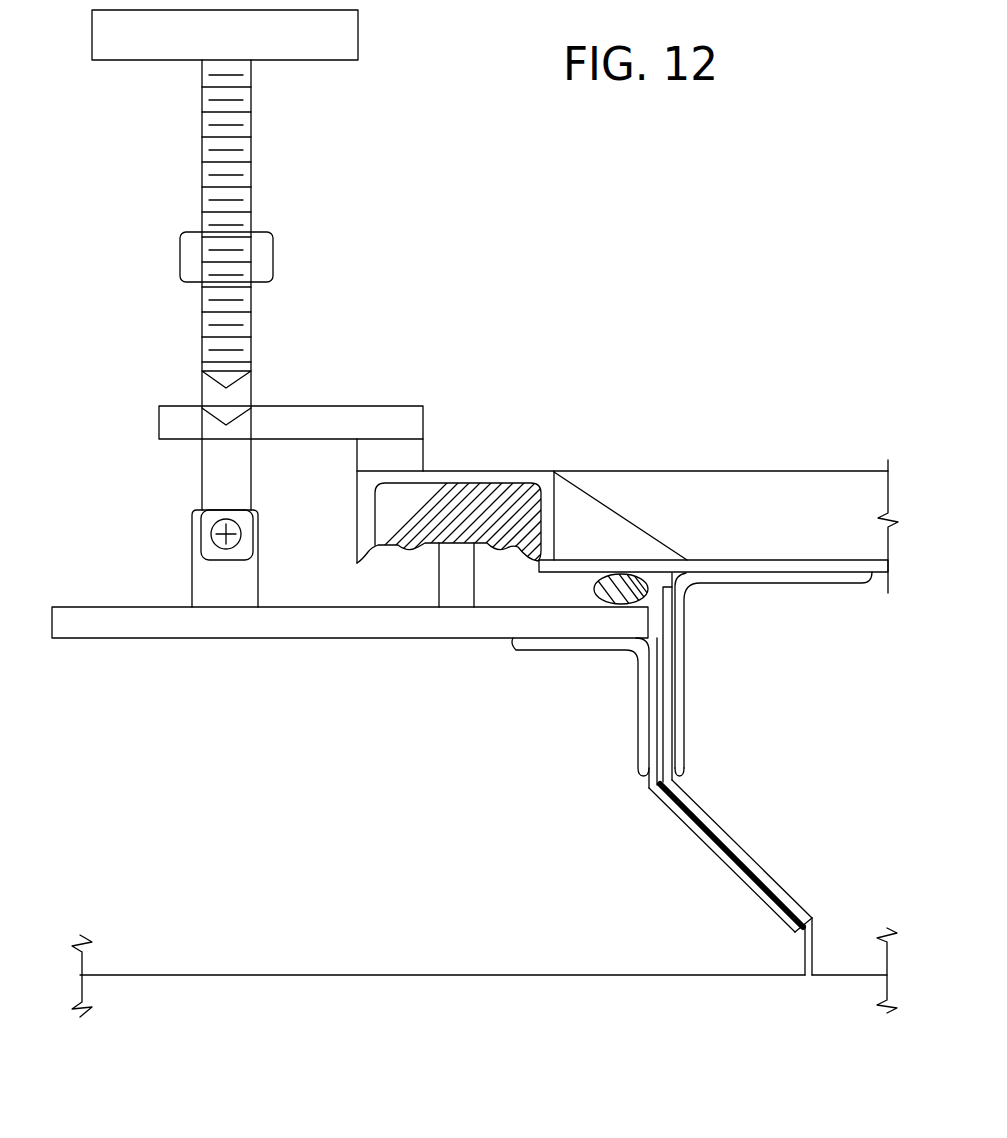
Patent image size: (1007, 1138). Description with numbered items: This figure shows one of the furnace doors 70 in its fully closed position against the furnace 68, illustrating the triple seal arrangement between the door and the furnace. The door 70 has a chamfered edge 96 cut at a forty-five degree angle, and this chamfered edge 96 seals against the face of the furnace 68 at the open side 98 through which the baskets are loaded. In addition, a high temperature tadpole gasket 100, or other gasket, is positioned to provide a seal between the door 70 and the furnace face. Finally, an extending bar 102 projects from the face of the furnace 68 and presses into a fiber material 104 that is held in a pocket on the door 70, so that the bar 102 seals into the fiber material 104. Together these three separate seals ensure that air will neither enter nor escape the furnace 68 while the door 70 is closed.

The furnace 68 is at (508, 845).
The door 70 is at (820, 729).
The chamfered edge 96 is at (747, 853).
The open side 98 is at (765, 905).
The tadpole gasket 100 is at (600, 588).
The extending bar 102 is at (448, 572).
The fiber material 104 is at (467, 497).